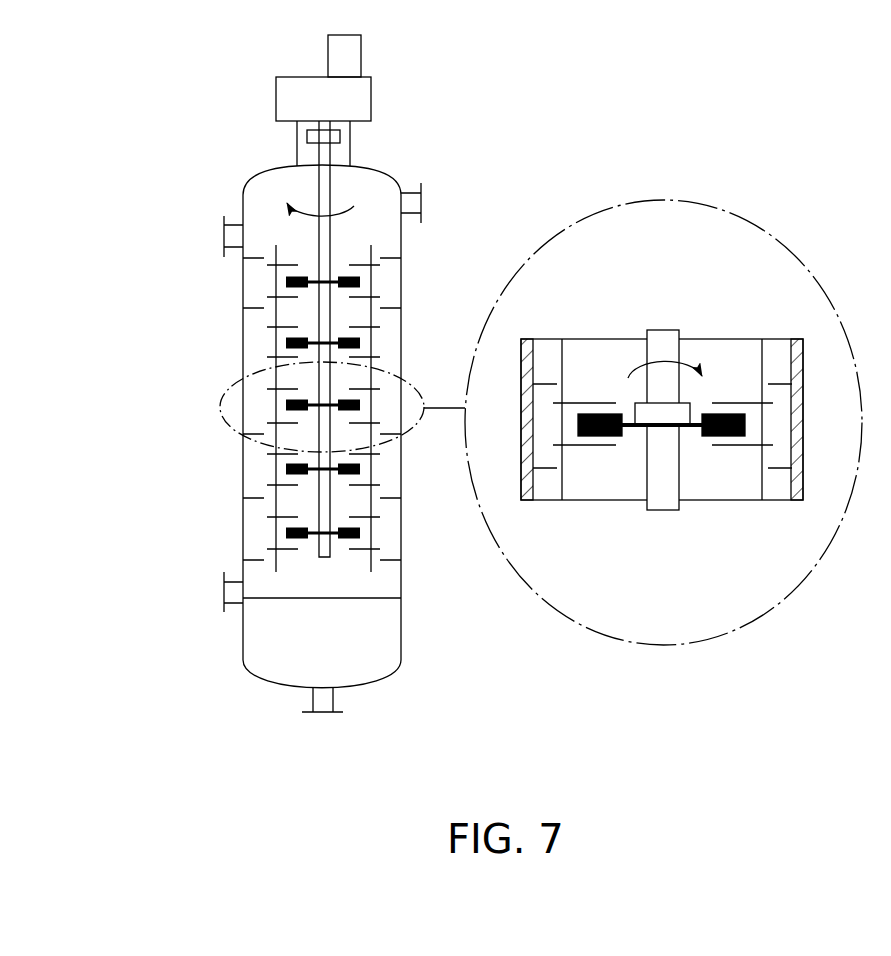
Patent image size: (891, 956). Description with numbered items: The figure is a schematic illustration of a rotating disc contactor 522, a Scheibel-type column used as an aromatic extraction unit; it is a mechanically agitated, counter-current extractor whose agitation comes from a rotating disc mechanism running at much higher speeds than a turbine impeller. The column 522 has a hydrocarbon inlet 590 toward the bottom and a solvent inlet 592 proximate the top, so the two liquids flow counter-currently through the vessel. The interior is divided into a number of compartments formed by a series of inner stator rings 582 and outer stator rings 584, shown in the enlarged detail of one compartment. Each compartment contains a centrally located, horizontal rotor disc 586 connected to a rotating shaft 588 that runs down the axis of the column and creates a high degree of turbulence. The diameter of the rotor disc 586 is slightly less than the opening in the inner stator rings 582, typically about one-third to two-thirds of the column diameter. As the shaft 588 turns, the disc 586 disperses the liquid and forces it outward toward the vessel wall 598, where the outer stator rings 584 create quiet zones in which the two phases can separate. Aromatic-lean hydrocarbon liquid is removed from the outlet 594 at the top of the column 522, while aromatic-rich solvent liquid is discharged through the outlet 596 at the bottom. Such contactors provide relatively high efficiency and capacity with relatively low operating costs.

The rotating disc contactor 522 is at (112, 112).
The inner stator rings 582 is at (742, 452).
The outer stator rings 584 is at (547, 380).
The rotor disc 586 is at (577, 447).
The rotating shaft 588 is at (662, 324).
The hydrocarbon inlet 590 is at (222, 590).
The solvent inlet 592 is at (222, 234).
The outlet 594 is at (550, 203).
The outlet 596 is at (322, 714).
The vessel wall 598 is at (791, 337).